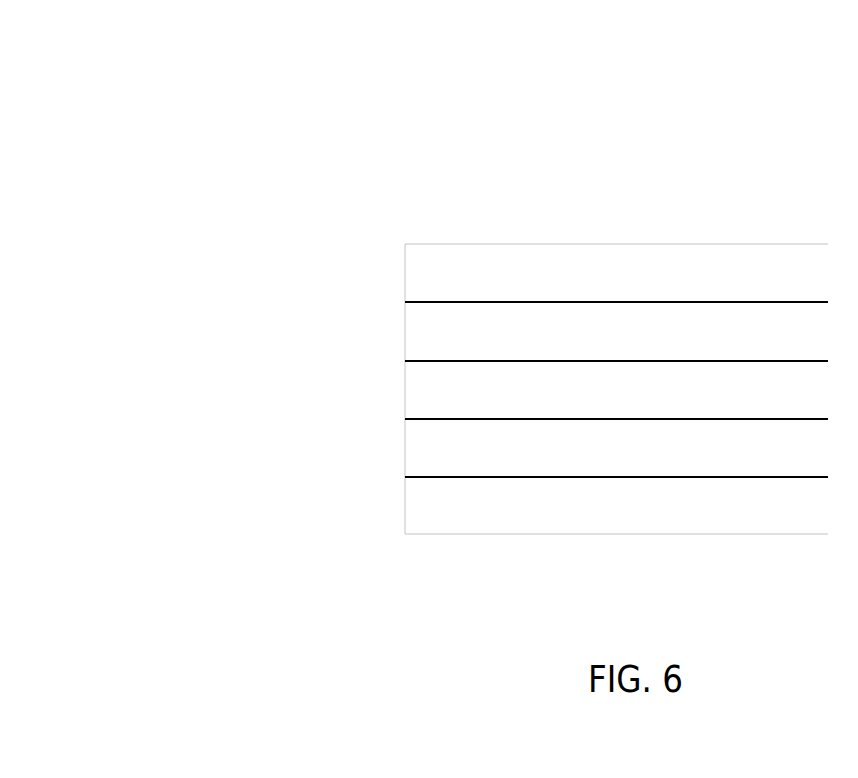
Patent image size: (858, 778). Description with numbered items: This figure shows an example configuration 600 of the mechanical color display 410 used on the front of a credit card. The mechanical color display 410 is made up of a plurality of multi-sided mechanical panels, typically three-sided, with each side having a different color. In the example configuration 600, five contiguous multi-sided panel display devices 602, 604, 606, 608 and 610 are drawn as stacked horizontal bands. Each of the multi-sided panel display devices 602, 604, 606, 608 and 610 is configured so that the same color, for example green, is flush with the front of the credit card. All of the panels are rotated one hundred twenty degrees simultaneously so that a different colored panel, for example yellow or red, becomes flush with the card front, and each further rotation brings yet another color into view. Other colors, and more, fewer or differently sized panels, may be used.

The example configuration 600 is at (116, 48).
The mechanical color display 410 is at (477, 245).
The multi-sided panel display device 602 is at (616, 283).
The multi-sided panel display device 604 is at (616, 343).
The multi-sided panel display device 606 is at (616, 399).
The multi-sided panel display device 608 is at (616, 456).
The multi-sided panel display device 610 is at (616, 505).